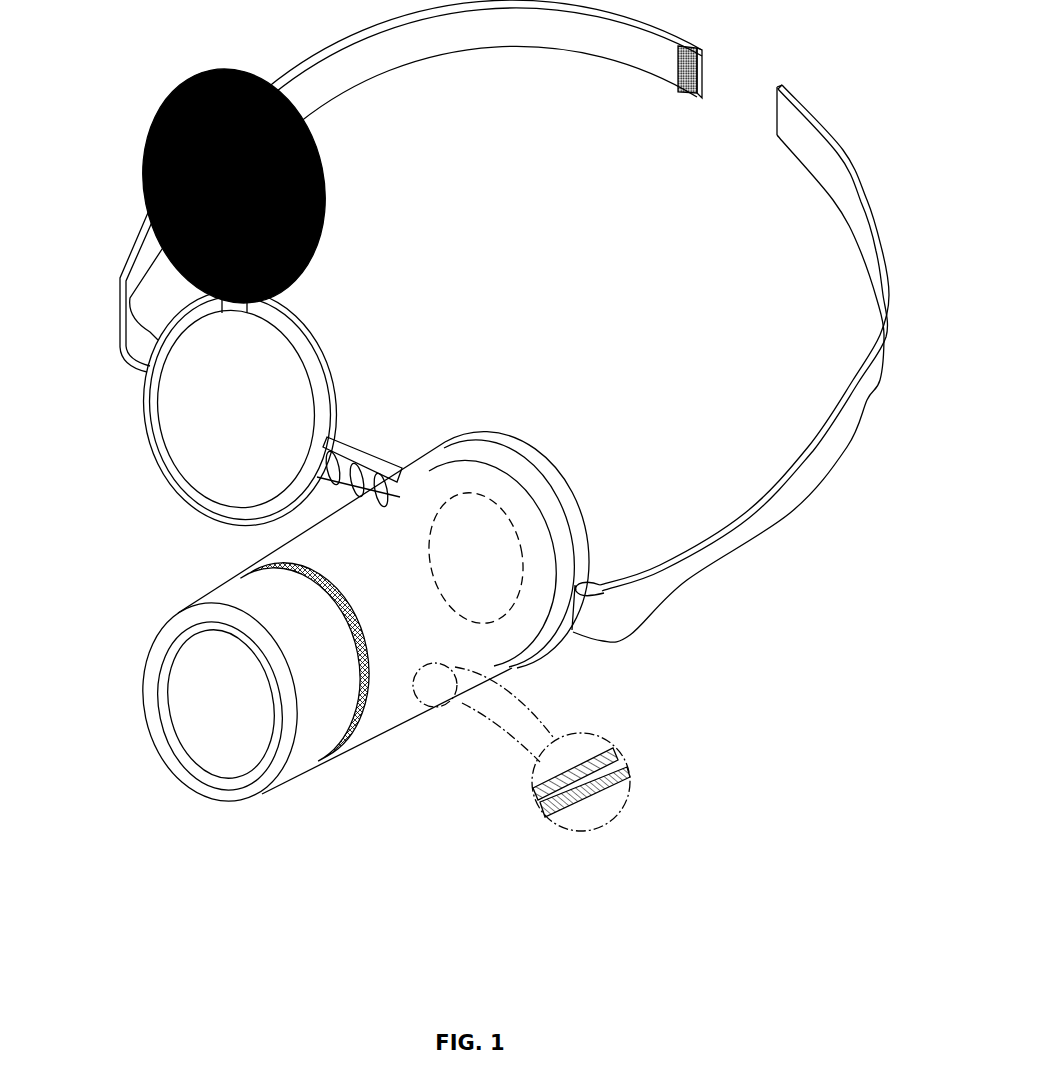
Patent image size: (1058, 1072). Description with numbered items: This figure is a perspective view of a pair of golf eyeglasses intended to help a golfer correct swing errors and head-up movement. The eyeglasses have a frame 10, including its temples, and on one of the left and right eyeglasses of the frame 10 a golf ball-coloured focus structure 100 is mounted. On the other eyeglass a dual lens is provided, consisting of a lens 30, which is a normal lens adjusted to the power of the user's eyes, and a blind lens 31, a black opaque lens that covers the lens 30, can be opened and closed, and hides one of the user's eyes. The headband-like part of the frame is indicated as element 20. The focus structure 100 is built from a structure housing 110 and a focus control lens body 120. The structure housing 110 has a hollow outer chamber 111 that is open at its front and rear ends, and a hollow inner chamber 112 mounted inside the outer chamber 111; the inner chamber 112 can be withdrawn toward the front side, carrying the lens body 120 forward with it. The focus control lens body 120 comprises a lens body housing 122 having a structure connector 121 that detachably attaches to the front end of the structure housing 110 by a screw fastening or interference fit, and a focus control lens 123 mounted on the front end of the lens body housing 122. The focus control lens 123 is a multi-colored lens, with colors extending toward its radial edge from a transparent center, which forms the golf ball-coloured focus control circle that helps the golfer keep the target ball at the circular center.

The frame 10 is at (358, 481).
The headband 20 is at (655, 594).
The lens 30 is at (168, 365).
The blind lens 31 is at (143, 152).
The golf ball-coloured focus structure 100 is at (160, 611).
The structure housing 110 is at (521, 808).
The outer chamber 111 is at (590, 810).
The inner chamber 112 is at (543, 810).
The focus control lens body 120 is at (247, 751).
The structure connector 121 is at (304, 699).
The lens body housing 122 is at (290, 786).
The focus control lens 123 is at (243, 721).